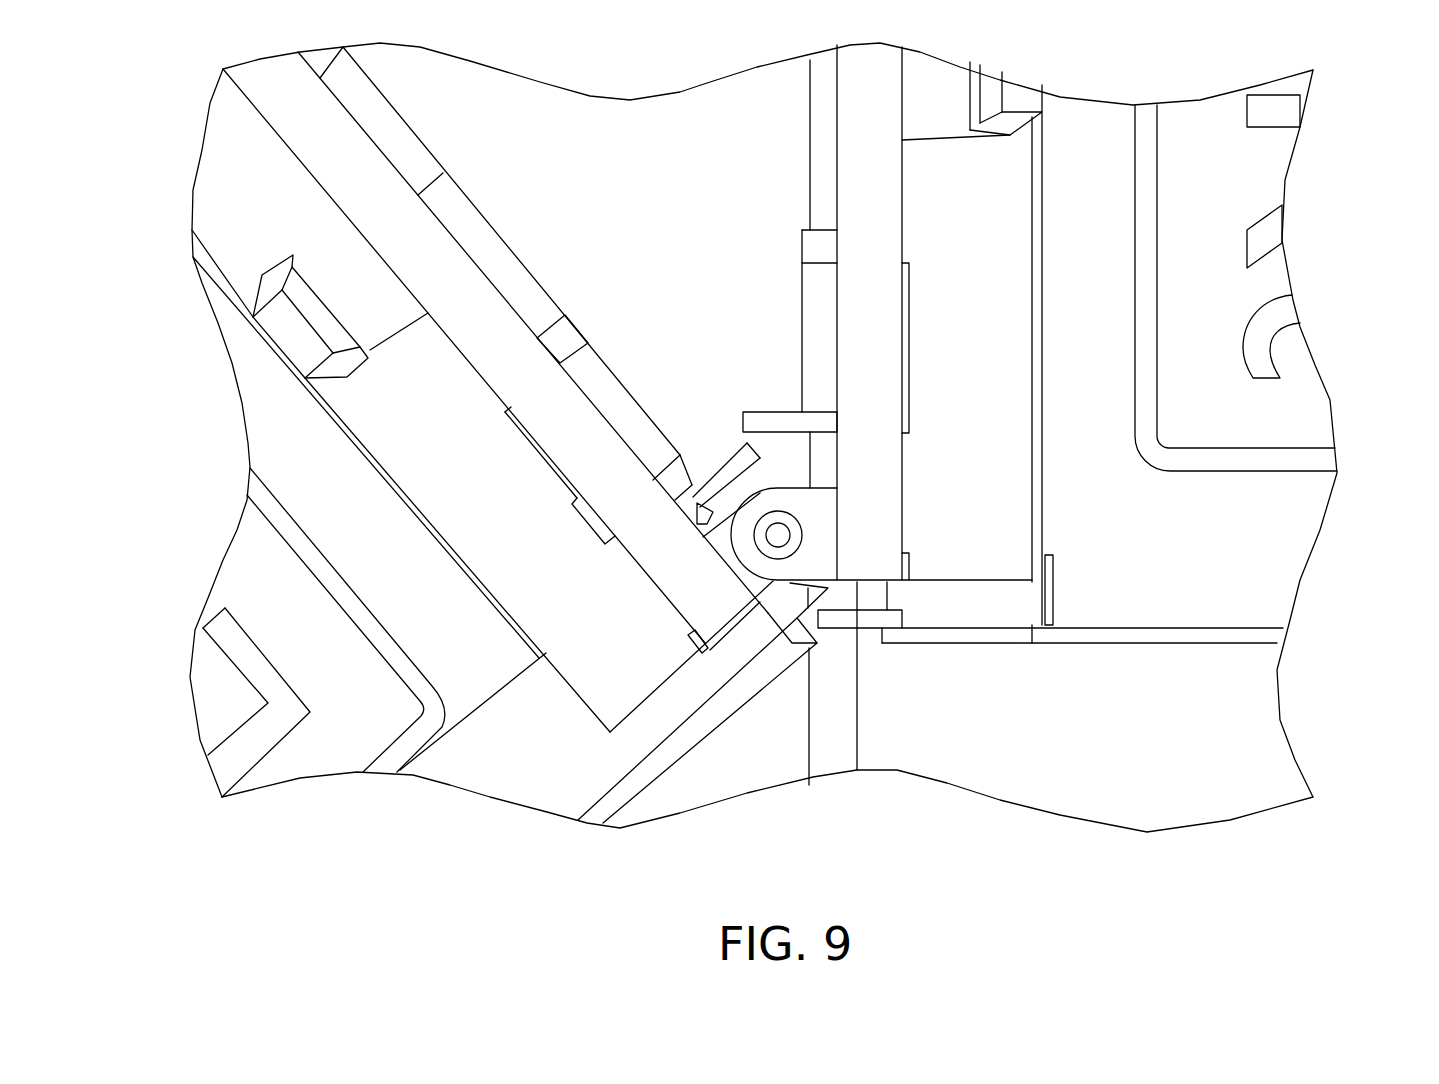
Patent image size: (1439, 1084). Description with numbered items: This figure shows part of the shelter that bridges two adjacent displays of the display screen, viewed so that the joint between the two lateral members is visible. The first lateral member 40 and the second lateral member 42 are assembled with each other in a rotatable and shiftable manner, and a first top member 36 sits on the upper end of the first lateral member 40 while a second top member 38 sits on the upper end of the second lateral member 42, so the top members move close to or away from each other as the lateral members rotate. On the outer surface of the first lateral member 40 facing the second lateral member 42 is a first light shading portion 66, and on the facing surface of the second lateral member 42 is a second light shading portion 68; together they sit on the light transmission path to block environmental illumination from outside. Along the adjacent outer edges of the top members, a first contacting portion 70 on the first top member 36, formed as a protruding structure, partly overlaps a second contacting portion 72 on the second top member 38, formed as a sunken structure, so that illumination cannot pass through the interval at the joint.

The first top member 36 is at (990, 602).
The second top member 38 is at (502, 765).
The first lateral member 40 is at (963, 400).
The second lateral member 42 is at (438, 389).
The first light shading portion 66 is at (963, 400).
The second light shading portion 68 is at (690, 500).
The first contacting portion 70 is at (893, 627).
The second contacting portion 72 is at (795, 652).